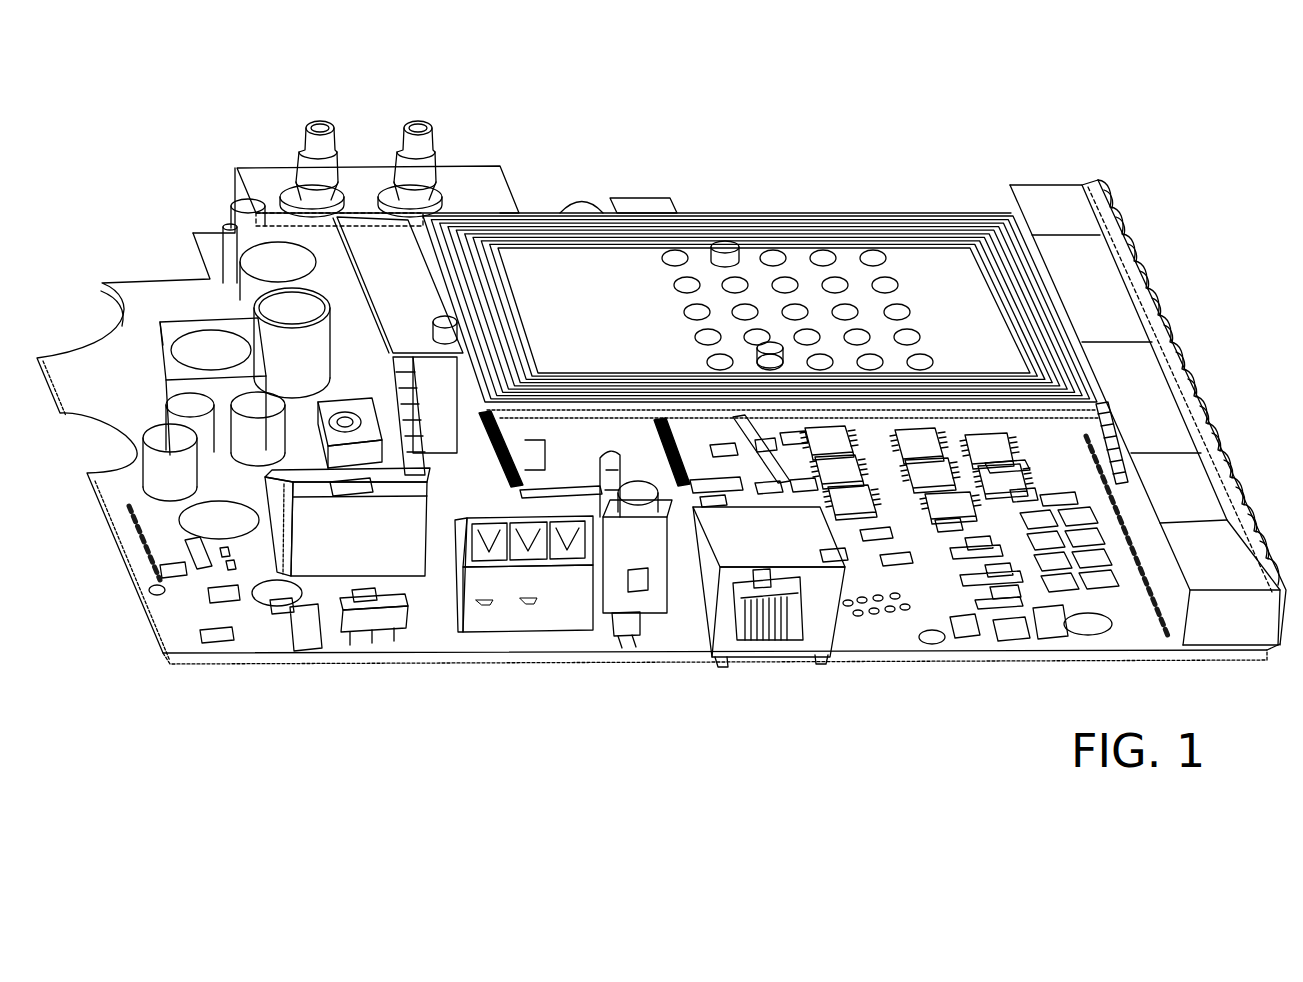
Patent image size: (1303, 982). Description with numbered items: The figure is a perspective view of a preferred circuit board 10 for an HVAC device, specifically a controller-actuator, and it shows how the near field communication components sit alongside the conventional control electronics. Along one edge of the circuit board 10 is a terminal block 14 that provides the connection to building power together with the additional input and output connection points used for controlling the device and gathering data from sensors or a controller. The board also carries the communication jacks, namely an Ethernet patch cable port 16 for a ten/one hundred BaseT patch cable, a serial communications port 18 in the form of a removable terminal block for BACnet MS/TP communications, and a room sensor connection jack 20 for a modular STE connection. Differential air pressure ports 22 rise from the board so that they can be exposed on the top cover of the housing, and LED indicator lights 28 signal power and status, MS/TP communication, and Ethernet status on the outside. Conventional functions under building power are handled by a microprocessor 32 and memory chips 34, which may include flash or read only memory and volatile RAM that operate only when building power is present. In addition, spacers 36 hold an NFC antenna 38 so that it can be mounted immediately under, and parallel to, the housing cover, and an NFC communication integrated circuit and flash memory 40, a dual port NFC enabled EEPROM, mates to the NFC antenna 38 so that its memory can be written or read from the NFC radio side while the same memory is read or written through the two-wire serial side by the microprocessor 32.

The circuit board 10 is at (661, 395).
The terminal block 14 is at (1110, 303).
The Ethernet patch cable port 16 is at (733, 582).
The EIA-485 port 18 is at (523, 613).
The room sensor connection jack 20 is at (627, 605).
The differential air pressure ports 22 is at (421, 119).
The LED indicator lights 28 is at (640, 507).
The microprocessor 32 is at (543, 455).
The memory chips 34 is at (842, 468).
The spacers 36 is at (449, 318).
The NFC antenna 38 is at (884, 215).
The NFC communication integrated circuit and flash memory 40 is at (948, 498).